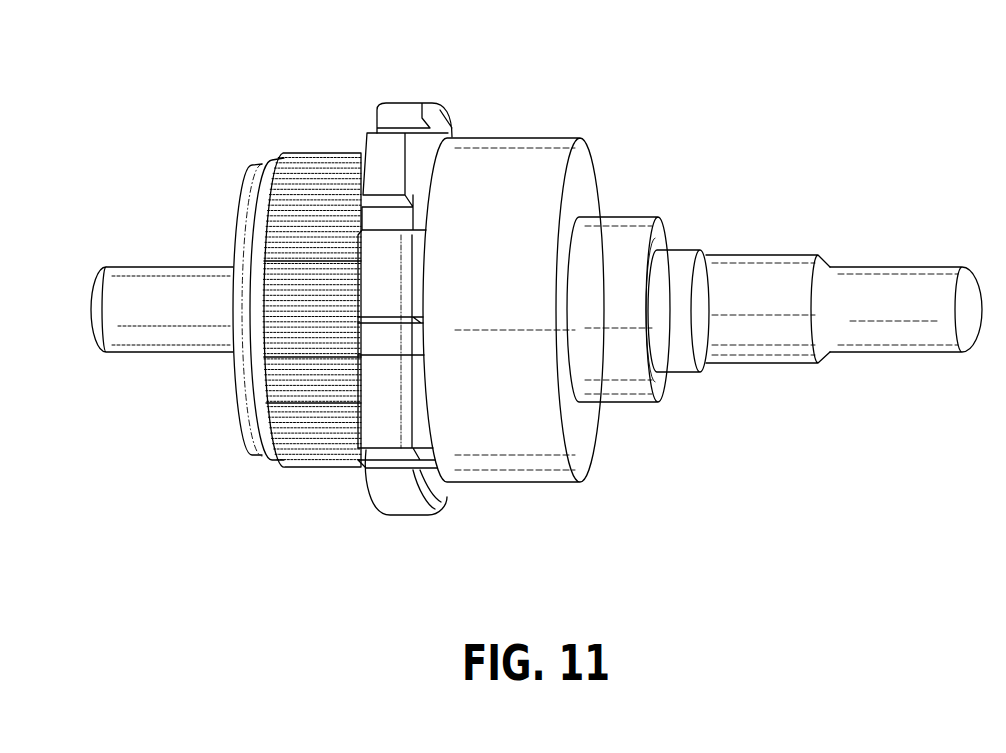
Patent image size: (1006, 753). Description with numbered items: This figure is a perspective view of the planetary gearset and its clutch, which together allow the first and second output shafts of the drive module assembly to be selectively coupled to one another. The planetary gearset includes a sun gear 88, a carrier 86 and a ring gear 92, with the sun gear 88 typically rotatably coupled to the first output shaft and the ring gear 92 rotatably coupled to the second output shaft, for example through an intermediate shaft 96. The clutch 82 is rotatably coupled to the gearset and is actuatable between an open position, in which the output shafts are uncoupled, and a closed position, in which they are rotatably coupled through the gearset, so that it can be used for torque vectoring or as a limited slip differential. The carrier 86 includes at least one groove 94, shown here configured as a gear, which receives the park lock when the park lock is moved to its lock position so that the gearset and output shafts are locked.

The clutch 82 is at (317, 173).
The carrier 86 is at (446, 137).
The sun gear 88 is at (142, 280).
The ring gear 92 is at (583, 180).
The groove 94 is at (393, 123).
The intermediate shaft 96 is at (778, 332).